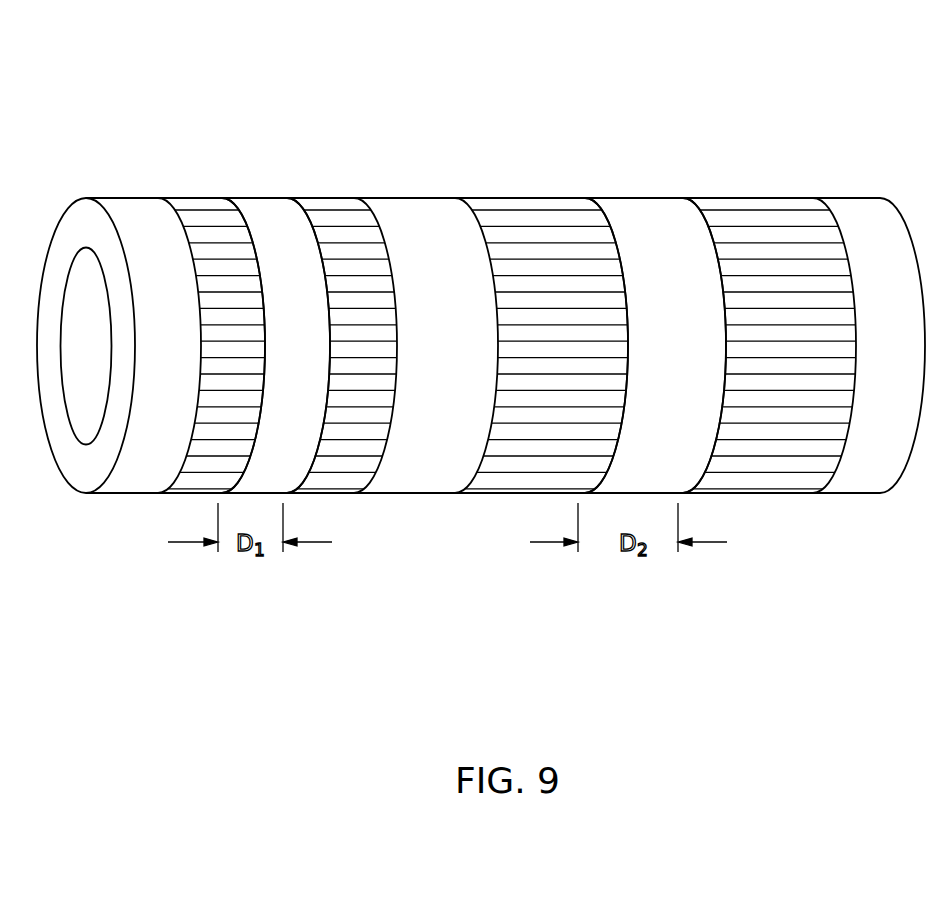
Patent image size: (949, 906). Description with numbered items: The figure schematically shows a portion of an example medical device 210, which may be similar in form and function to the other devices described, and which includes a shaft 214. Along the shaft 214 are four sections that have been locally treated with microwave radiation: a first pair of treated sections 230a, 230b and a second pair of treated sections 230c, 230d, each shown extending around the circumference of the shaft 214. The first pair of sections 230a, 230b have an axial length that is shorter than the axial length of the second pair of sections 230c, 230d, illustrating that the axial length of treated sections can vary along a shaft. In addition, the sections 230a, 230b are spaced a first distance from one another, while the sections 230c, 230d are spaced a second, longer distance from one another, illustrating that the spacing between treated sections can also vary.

The device 210 is at (728, 88).
The shaft 214 is at (437, 193).
The treated section 230a is at (193, 205).
The treated section 230b is at (327, 205).
The treated section 230c is at (522, 205).
The treated section 230d is at (757, 205).